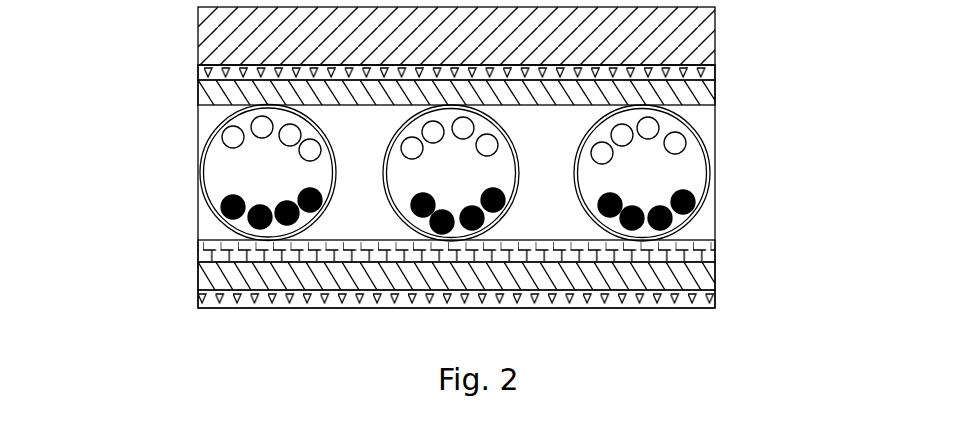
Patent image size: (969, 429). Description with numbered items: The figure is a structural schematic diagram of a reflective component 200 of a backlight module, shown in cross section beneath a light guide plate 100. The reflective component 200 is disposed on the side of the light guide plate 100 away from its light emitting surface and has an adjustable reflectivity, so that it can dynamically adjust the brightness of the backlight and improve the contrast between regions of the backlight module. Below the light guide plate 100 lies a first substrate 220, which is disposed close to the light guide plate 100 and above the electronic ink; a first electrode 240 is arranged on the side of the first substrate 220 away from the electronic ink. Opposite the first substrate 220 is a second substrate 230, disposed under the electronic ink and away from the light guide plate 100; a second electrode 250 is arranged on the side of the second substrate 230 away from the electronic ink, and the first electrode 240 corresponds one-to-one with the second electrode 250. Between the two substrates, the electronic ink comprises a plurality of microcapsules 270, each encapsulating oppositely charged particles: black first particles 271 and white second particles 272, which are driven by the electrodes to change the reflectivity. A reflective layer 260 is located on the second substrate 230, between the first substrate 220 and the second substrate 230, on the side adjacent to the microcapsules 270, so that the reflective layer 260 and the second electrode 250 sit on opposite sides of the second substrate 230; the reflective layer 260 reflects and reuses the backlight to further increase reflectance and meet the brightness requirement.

The light guide plate 100 is at (197, 33).
The reflective component 200 is at (188, 65).
The first electrode 240 is at (715, 70).
The first substrate 220 is at (715, 88).
The microcapsule 270 is at (686, 145).
The second particles 272 is at (700, 163).
The first particles 271 is at (695, 200).
The reflective layer 260 is at (715, 255).
The second substrate 230 is at (715, 277).
The second electrode 250 is at (715, 300).